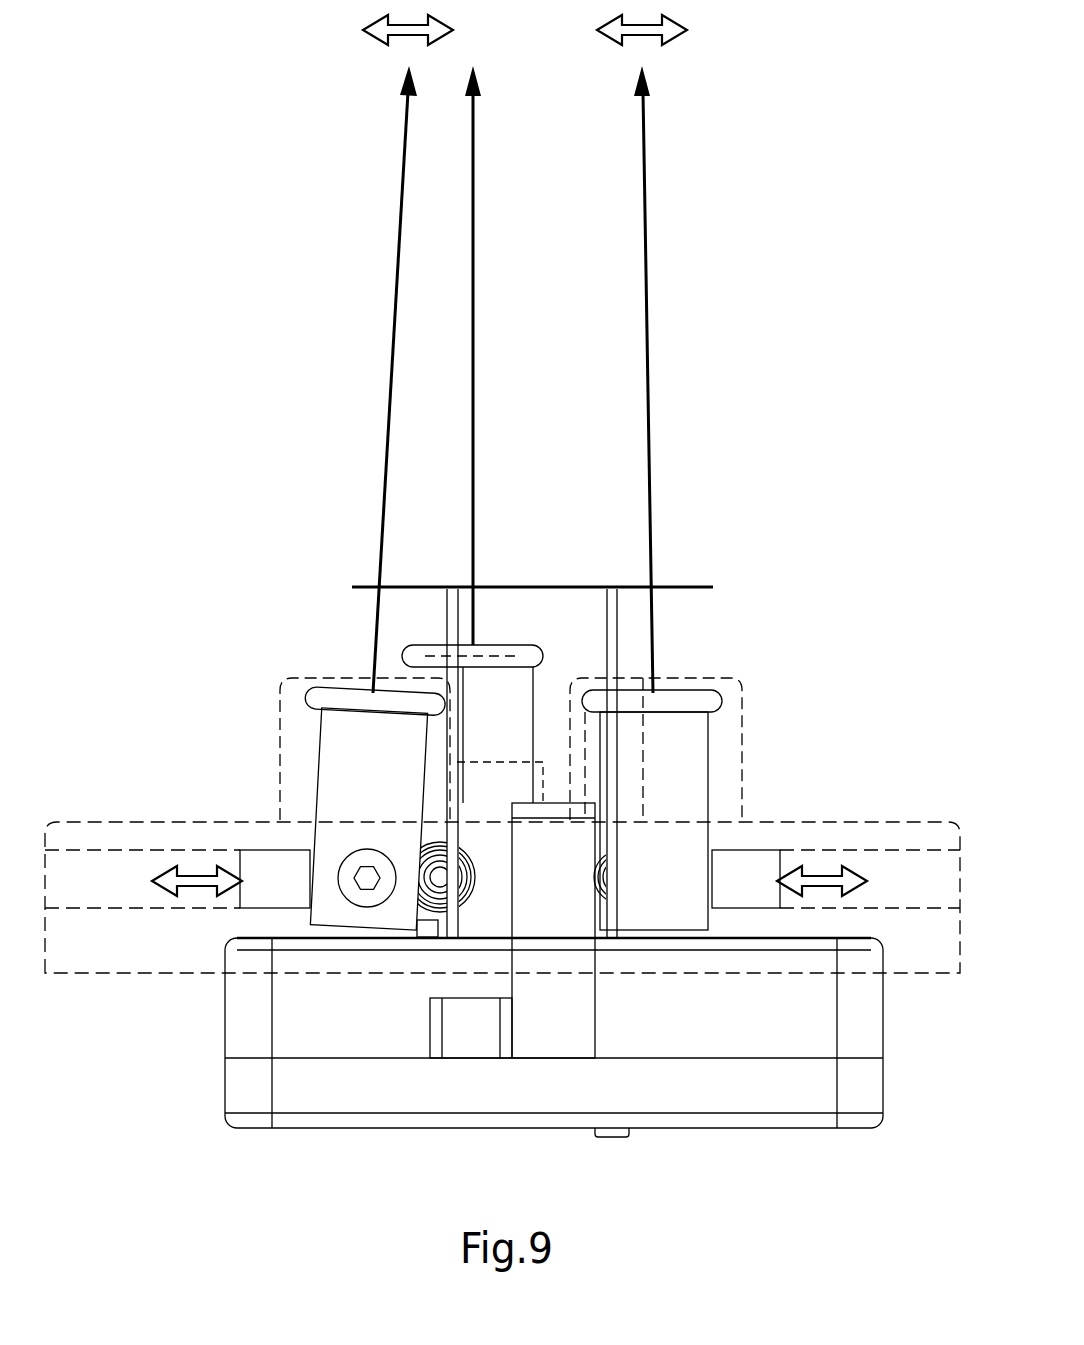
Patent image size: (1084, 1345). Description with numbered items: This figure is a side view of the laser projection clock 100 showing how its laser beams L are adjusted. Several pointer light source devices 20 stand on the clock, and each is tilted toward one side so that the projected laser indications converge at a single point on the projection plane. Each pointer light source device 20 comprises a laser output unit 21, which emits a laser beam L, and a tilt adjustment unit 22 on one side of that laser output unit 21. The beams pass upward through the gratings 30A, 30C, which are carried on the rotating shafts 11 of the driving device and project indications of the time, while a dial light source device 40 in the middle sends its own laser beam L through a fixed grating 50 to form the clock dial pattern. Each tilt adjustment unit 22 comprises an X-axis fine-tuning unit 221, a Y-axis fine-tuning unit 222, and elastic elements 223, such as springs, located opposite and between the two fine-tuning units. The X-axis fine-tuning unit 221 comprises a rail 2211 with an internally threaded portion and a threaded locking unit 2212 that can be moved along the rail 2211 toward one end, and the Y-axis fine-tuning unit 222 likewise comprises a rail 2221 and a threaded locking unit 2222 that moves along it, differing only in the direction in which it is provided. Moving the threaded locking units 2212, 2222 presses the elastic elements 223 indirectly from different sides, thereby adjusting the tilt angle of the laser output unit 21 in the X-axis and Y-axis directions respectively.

The laser projection clock 100 is at (820, 45).
The laser beam L is at (642, 240).
The grating 30A is at (360, 582).
The grating 30C is at (695, 582).
The rotating shaft 11 is at (452, 622).
The fixed grating 50 is at (510, 653).
The dial light source device 40 is at (495, 642).
The pointer light source device 20 is at (337, 688).
The laser output unit 21 is at (357, 735).
The tilt adjustment unit 22 is at (106, 1130).
The X-axis fine-tuning unit 221 is at (215, 910).
The Y-axis fine-tuning unit 222 is at (353, 907).
The elastic element 223 is at (435, 908).
The rail 2211 is at (157, 850).
The threaded locking unit 2212 is at (268, 868).
The rail 2221 is at (318, 822).
The threaded locking unit 2222 is at (370, 860).